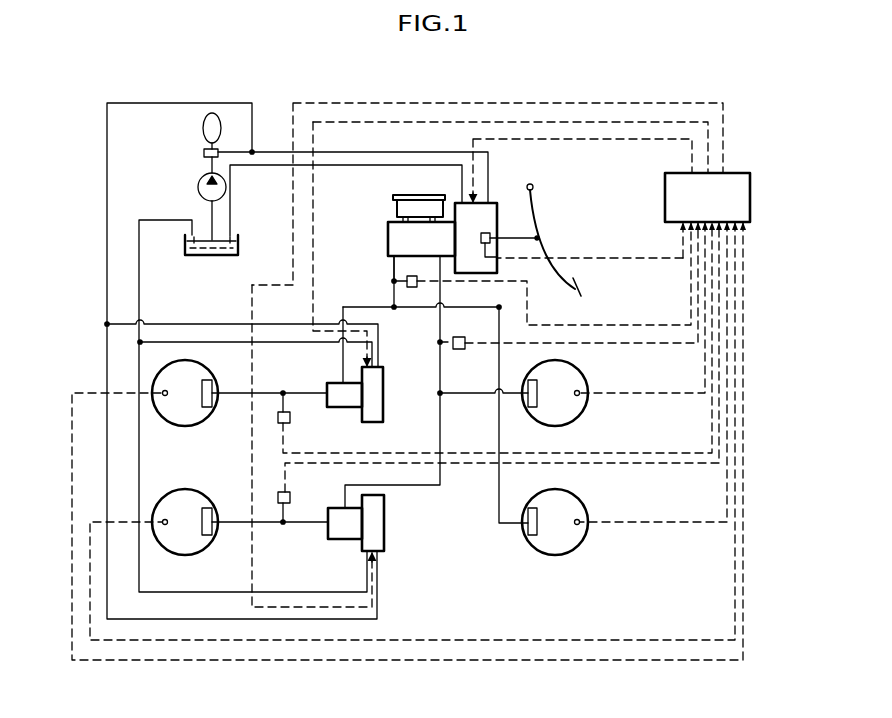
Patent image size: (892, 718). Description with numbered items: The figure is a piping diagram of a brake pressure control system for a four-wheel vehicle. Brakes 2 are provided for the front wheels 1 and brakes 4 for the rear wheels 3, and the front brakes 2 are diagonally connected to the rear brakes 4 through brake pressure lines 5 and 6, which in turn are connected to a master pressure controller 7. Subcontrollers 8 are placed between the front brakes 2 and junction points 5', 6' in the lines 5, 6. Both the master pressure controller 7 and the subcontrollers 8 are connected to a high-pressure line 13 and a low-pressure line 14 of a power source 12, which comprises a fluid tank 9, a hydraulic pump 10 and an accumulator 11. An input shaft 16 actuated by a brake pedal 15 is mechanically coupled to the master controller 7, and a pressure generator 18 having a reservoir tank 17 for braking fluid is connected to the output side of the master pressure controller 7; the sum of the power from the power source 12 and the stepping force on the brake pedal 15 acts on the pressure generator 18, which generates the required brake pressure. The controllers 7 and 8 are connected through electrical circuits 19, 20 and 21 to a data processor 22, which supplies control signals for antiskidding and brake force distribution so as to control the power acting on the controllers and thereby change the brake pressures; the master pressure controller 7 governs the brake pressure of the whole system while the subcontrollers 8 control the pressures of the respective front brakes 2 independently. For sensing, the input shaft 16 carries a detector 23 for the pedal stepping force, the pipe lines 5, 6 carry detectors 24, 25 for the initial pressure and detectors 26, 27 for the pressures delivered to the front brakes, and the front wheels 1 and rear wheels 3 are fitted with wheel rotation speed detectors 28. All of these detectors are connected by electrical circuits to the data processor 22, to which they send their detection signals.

The front wheel 1 is at (190, 415).
The front brake 2 is at (212, 407).
The rear wheel 3 is at (575, 408).
The rear brake 4 is at (528, 405).
The brake pressure line 5 is at (422, 319).
The junction point 5' is at (400, 300).
The brake pressure line 6 is at (393, 382).
The junction point 6' is at (467, 415).
The master pressure controller 7 is at (501, 200).
The subcontroller 8 is at (383, 399).
The fluid tank 9 is at (186, 251).
The hydraulic pump 10 is at (199, 182).
The accumulator 11 is at (203, 128).
The power source 12 is at (203, 211).
The high-pressure line 13 is at (197, 103).
The low-pressure line 14 is at (231, 212).
The brake pedal 15 is at (582, 292).
The input shaft 16 is at (520, 238).
The reservoir tank 17 is at (397, 210).
The pressure generator 18 is at (398, 243).
The electrical circuit 19 is at (600, 140).
The electrical circuit 20 is at (611, 121).
The electrical circuit 21 is at (647, 103).
The data processor 22 is at (695, 208).
The pedal stepping force detector 23 is at (490, 243).
The initial pressure detector 24 is at (406, 279).
The initial pressure detector 25 is at (462, 349).
The front brake pressure detector 26 is at (290, 420).
The front brake pressure detector 27 is at (290, 496).
The wheel rotation speed detector 28 is at (165, 396).